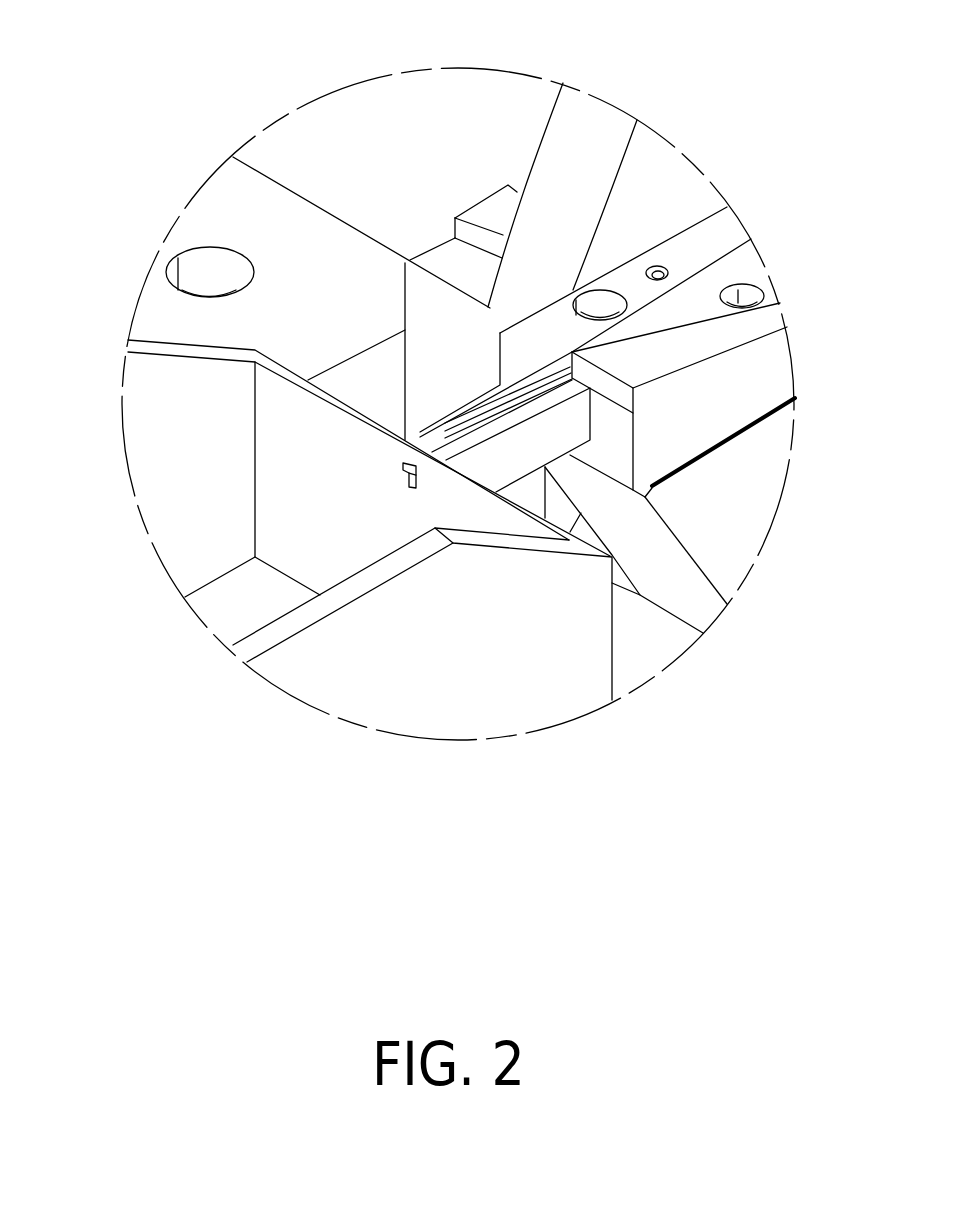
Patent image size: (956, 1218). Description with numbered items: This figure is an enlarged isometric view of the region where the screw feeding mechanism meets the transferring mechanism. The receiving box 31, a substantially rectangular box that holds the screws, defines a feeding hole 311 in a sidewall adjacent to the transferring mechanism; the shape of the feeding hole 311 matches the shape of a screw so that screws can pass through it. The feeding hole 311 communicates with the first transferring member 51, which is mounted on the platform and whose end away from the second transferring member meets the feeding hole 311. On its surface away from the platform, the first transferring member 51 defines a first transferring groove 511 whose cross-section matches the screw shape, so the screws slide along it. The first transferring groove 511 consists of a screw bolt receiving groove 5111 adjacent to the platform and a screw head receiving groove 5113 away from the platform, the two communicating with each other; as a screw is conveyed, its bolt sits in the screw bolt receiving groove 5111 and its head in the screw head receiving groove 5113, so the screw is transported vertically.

The receiving box 31 is at (368, 683).
The feeding hole 311 is at (403, 473).
The first transferring member 51 is at (567, 425).
The first transferring groove 511 is at (442, 437).
The screw bolt receiving groove 5111 is at (448, 447).
The screw head receiving groove 5113 is at (497, 412).